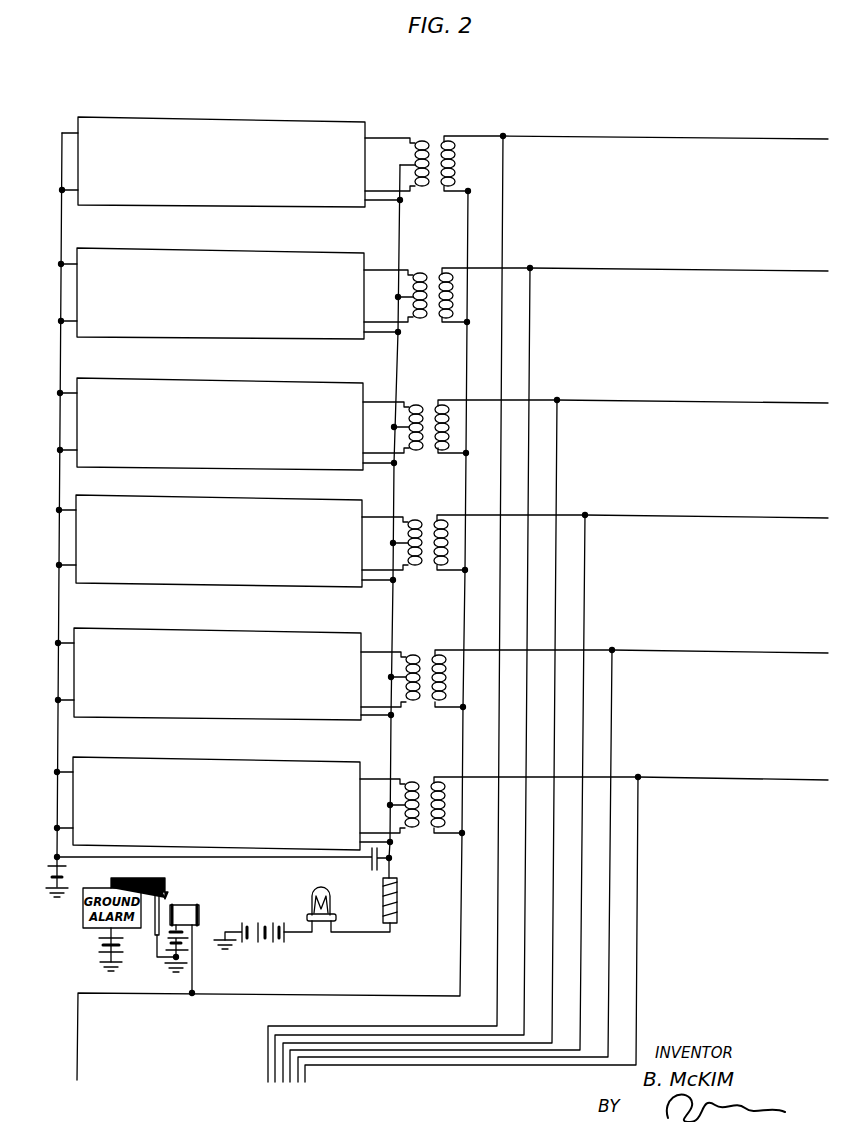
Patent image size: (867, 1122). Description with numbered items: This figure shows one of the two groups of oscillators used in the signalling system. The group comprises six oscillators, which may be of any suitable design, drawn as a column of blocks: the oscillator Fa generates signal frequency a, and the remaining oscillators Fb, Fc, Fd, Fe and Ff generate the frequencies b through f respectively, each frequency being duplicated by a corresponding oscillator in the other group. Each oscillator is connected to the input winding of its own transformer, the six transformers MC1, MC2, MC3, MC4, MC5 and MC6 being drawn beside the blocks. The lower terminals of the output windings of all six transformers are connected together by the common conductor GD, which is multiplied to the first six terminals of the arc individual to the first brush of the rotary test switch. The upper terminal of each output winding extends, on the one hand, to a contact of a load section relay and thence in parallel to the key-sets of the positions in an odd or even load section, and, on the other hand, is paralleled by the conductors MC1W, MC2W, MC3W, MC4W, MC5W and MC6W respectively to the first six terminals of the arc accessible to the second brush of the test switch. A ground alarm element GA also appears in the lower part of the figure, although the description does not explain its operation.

The transformer MC1 is at (436, 134).
The transformer MC2 is at (434, 267).
The transformer MC3 is at (432, 403).
The transformer MC4 is at (430, 518).
The transformer MC5 is at (428, 653).
The transformer MC6 is at (427, 780).
The conductor MC1W is at (503, 206).
The conductor MC2W is at (529, 332).
The conductor MC3W is at (556, 460).
The conductor MC4W is at (584, 580).
The conductor MC5W is at (611, 710).
The conductor MC6W is at (637, 838).
The ground alarm relay GA is at (188, 905).
The conductor GD is at (460, 947).
The oscillator Fa is at (221, 162).
The oscillator Fb is at (220, 293).
The oscillator Fc is at (220, 424).
The oscillator Fd is at (219, 541).
The oscillator Fe is at (217, 674).
The oscillator Ff is at (216, 803).